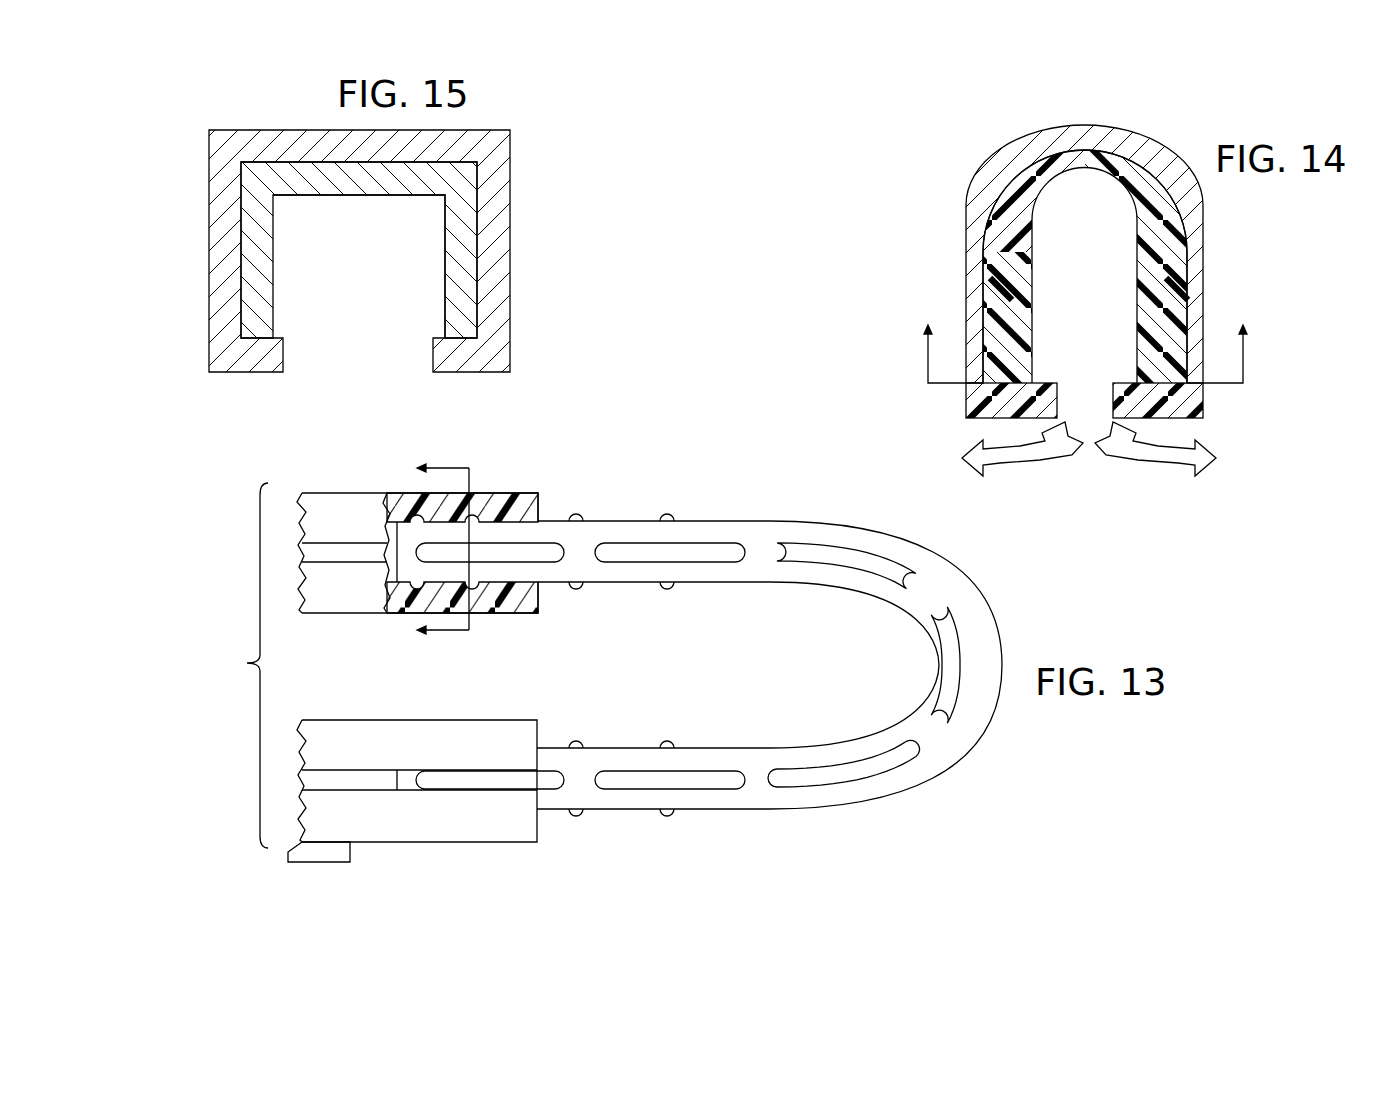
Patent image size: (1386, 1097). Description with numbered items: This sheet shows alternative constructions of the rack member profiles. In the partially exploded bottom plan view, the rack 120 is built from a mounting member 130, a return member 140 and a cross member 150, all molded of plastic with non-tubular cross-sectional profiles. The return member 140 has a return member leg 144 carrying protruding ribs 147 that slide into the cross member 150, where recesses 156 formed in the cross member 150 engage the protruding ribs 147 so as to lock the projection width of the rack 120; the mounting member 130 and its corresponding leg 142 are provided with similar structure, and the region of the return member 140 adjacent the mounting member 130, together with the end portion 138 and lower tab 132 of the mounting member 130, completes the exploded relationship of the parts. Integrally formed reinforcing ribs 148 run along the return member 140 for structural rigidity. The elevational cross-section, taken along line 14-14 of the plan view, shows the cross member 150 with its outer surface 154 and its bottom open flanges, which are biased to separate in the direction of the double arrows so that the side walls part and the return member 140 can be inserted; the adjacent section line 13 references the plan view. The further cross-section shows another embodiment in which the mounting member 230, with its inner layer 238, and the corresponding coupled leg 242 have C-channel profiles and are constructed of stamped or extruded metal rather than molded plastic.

In FIG. 13, the rack 120 is at (245, 663).
In FIG. 13, the mounting member 130 is at (413, 703).
In FIG. 13, the tab 132 is at (352, 846).
In FIG. 13, the lower arm 138 is at (541, 804).
In FIG. 13, the return member 140 is at (1010, 604).
In FIG. 13, the leg 142 is at (553, 748).
In FIG. 14, the return member leg 144 is at (1040, 281).
In FIG. 13, the return member leg 144 is at (624, 530).
In FIG. 14, the protruding ribs 147 is at (1002, 252).
In FIG. 13, the protruding ribs 147 is at (472, 510).
In FIG. 13, the reinforcing ribs 148 is at (752, 553).
In FIG. 14, the cross member 150 is at (1156, 111).
In FIG. 13, the cross member 150 is at (377, 640).
In FIG. 14, the outer surface 154 is at (1076, 124).
In FIG. 13, the outer surface 154 is at (540, 524).
In FIG. 14, the recesses 156 is at (993, 282).
In FIG. 13, the recesses 156 is at (430, 517).
In FIG. 13, the line 14- 14 is at (426, 552).
In FIG. 14, the section line 13- 13 is at (1085, 354).
In FIG. 15, the mounting member 230 is at (520, 150).
In FIG. 15, the inner layer 238 is at (307, 170).
In FIG. 15, the leg 242 is at (367, 200).